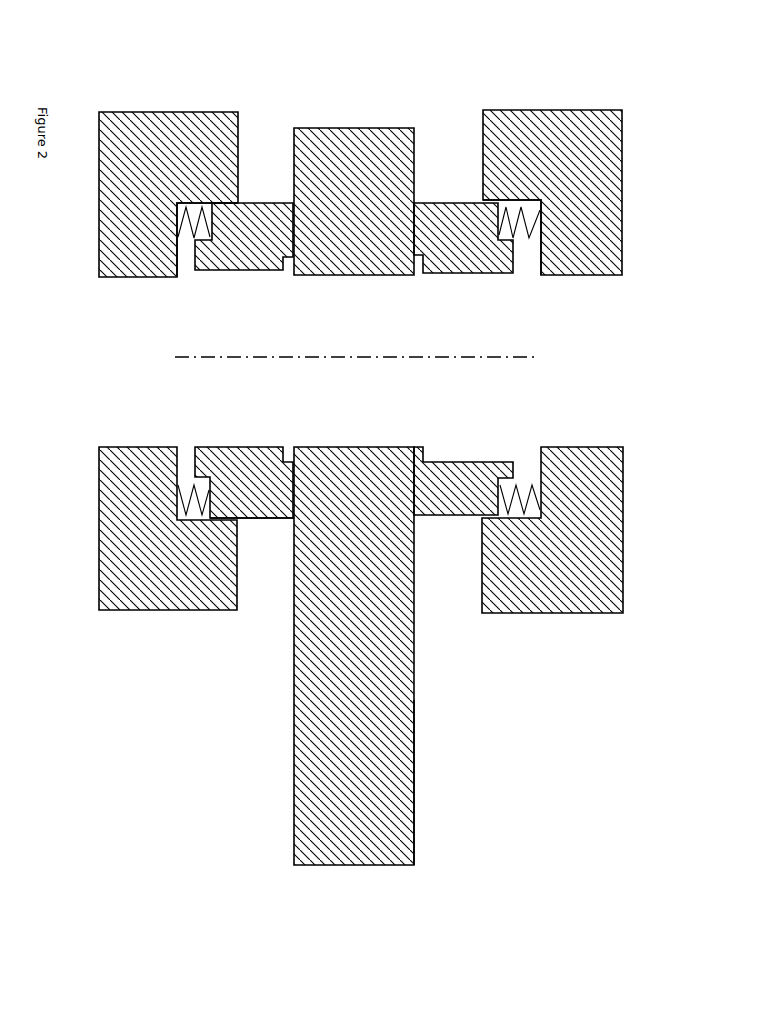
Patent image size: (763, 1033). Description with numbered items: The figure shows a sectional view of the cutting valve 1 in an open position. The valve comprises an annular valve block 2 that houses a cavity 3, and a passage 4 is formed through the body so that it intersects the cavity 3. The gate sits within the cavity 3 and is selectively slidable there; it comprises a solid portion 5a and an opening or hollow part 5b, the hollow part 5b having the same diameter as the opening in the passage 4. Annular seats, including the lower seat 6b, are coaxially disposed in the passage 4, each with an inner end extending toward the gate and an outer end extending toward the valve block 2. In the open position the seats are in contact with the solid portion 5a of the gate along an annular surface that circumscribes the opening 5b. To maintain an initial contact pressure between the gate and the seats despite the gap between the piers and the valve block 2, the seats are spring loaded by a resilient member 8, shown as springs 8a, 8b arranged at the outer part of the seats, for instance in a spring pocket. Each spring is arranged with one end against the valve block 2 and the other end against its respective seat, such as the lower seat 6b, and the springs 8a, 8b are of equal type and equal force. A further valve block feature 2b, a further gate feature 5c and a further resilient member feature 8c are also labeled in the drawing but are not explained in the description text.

The tool assembly 1 is at (413, 627).
The outer clamping block 2 is at (112, 110).
The recess of outer block 2b is at (177, 233).
The lower tool part 3 is at (359, 627).
The parting plane 4 is at (535, 357).
The side surface of central block 5a is at (400, 773).
The shoulder of central block 5b is at (293, 518).
The underside of arm 5c is at (443, 518).
The insert block 6b is at (238, 522).
The insert block 8 is at (508, 130).
The spring element 8a is at (520, 207).
The insert block 8b is at (197, 240).
The recess 8c is at (520, 215).